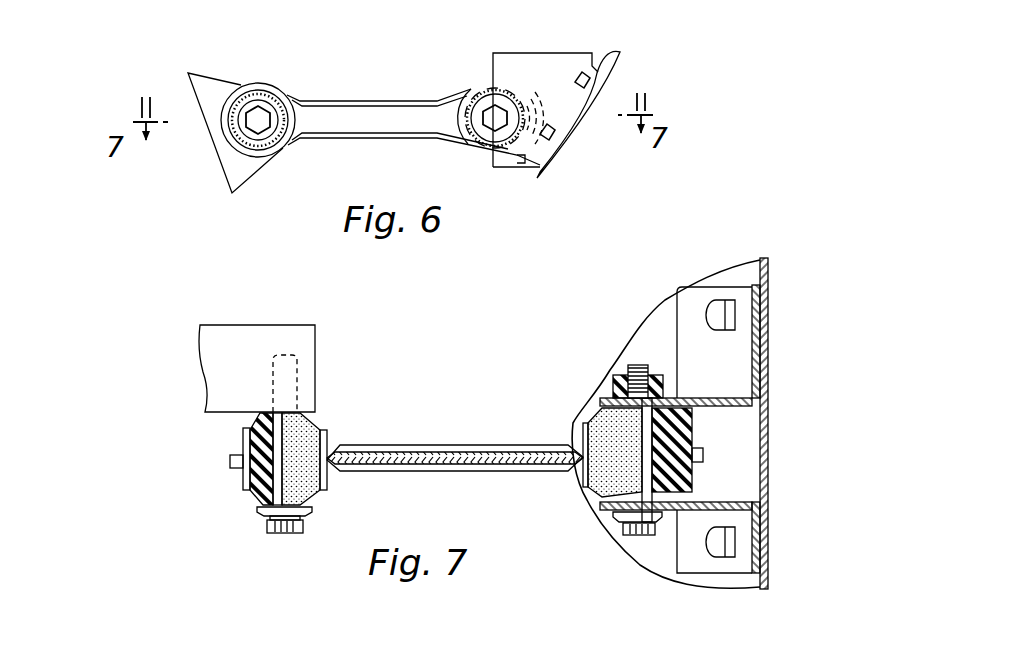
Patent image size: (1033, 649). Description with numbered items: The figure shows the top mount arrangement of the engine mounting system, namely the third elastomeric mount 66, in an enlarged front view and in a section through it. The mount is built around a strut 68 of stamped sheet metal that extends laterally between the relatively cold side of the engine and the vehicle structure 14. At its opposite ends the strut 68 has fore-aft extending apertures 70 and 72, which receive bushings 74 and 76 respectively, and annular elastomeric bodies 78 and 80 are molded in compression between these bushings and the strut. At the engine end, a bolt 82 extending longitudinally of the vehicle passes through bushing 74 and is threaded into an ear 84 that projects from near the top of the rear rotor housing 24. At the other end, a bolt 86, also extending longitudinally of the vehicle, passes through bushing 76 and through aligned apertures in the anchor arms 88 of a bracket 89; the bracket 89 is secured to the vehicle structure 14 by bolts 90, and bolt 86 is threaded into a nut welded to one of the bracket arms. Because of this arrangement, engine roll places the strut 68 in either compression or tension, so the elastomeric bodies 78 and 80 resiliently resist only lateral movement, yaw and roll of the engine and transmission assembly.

In FIG. 6, the automotive vehicle structure 14 is at (630, 70).
In FIG. 7, the automotive vehicle structure 14 is at (770, 274).
In FIG. 7, the rear rotor housing 24 is at (200, 329).
In FIG. 6, the third elastomeric mount 66 is at (364, 104).
In FIG. 7, the third elastomeric mount 66 is at (412, 442).
In FIG. 6, the strut 68 is at (416, 103).
In FIG. 7, the strut 68 is at (493, 443).
In FIG. 7, the aperture 70 is at (243, 484).
In FIG. 7, the aperture 72 is at (690, 470).
In FIG. 7, the bushing 74 is at (261, 498).
In FIG. 7, the bushing 76 is at (601, 487).
In FIG. 6, the annular elastomeric body 78 is at (283, 135).
In FIG. 7, the annular elastomeric body 78 is at (243, 436).
In FIG. 6, the annular elastomeric body 80 is at (486, 150).
In FIG. 7, the annular elastomeric body 80 is at (676, 410).
In FIG. 6, the bolt 82 is at (262, 112).
In FIG. 7, the bolt 82 is at (283, 536).
In FIG. 6, the ear 84 is at (241, 168).
In FIG. 7, the ear 84 is at (300, 341).
In FIG. 6, the bolt 86 is at (484, 120).
In FIG. 7, the bolt 86 is at (632, 537).
In FIG. 7, the anchor arms 88 is at (741, 500).
In FIG. 6, the bracket 89 is at (583, 56).
In FIG. 7, the bracket 89 is at (746, 394).
In FIG. 6, the bolts 90 is at (578, 84).
In FIG. 7, the bolts 90 is at (736, 320).